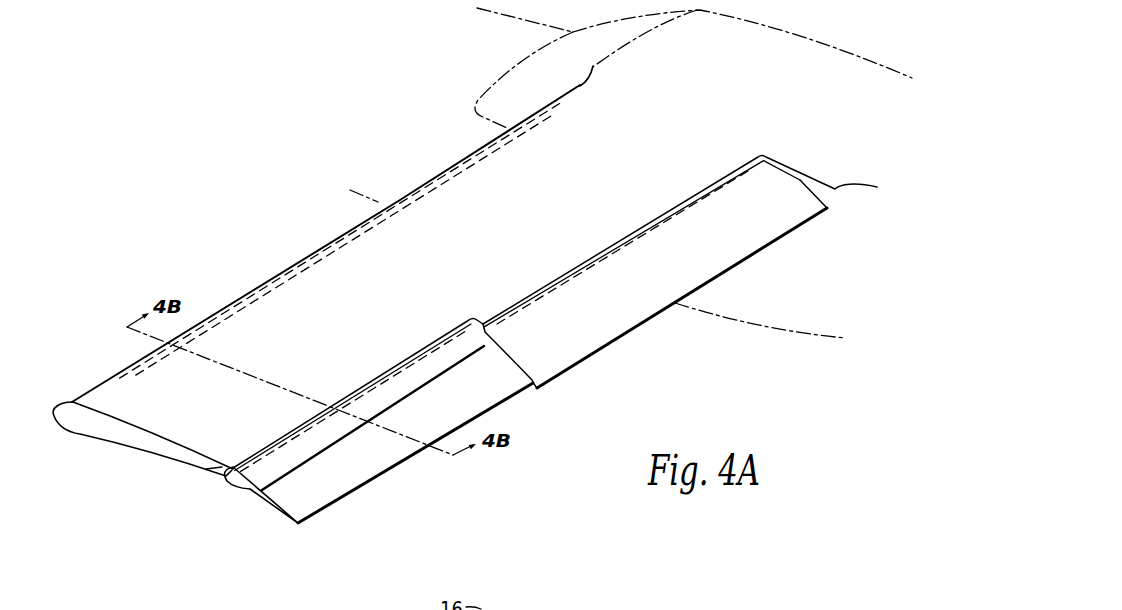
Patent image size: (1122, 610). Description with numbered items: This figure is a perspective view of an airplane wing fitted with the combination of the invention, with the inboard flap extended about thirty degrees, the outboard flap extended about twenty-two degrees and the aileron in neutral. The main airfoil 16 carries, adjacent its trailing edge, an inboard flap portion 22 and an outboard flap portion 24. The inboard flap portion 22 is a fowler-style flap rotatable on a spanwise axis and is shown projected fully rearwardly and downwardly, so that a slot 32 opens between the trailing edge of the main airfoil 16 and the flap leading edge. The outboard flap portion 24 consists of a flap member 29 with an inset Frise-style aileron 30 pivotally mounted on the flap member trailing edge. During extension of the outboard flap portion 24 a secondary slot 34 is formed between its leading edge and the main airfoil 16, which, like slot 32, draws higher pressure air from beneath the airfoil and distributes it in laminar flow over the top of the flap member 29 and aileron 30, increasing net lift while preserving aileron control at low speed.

The main airfoil 16 is at (348, 273).
The inboard flap portion 22 is at (567, 333).
The outboard flap portion 24 is at (292, 528).
The flap member 29 is at (320, 430).
The aileron 30 is at (315, 478).
The slot 32 is at (588, 267).
The secondary slot 34 is at (205, 470).